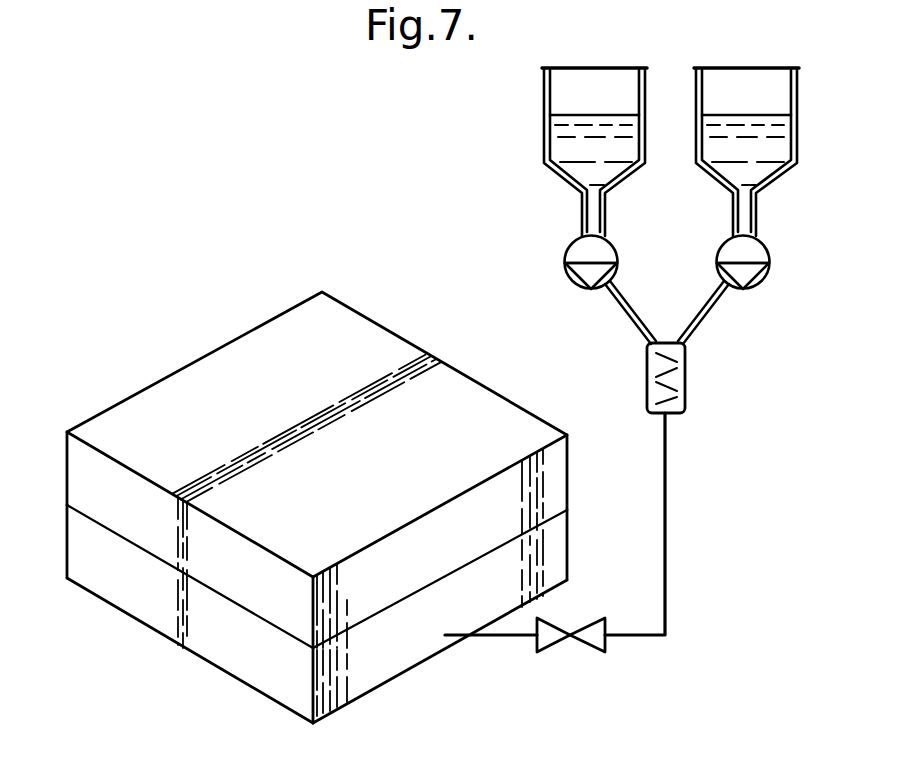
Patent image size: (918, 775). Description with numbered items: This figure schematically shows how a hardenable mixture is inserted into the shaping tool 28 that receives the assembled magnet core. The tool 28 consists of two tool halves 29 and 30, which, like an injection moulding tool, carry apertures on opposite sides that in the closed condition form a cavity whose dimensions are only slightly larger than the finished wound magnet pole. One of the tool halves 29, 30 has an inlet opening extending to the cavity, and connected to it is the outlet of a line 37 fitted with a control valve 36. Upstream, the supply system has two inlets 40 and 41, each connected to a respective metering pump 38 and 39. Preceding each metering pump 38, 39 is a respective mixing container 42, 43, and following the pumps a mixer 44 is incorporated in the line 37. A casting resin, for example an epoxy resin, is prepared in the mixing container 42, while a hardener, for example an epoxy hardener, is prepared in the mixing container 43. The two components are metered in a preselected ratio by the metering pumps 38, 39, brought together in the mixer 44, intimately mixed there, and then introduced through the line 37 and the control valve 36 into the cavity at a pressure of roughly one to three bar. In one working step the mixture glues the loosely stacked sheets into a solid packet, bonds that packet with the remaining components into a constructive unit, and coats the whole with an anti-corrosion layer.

The shaping tool 28 is at (236, 314).
The tool half 29 is at (168, 387).
The tool half 30 is at (163, 623).
The control valve 36 is at (590, 637).
The line 37 is at (667, 548).
The metering pump 38 is at (755, 255).
The metering pump 39 is at (573, 253).
The inlet 40 is at (727, 312).
The inlet 41 is at (610, 312).
The mixing container 42 is at (747, 80).
The mixing container 43 is at (595, 80).
The mixer 44 is at (677, 385).